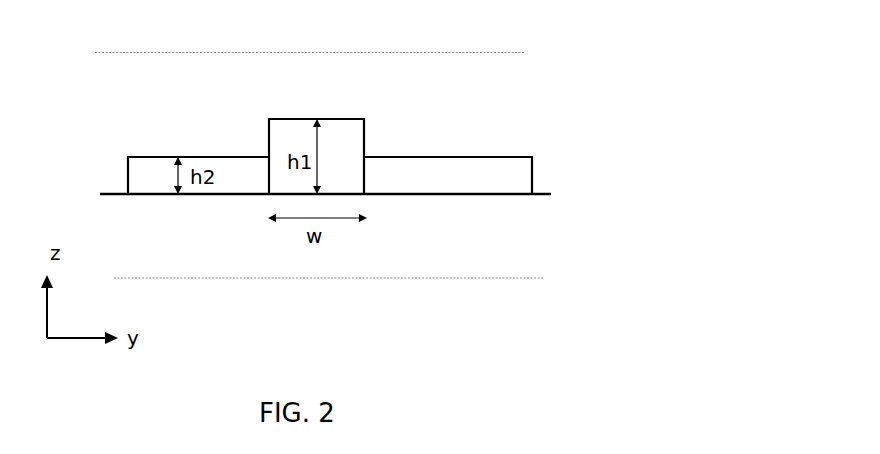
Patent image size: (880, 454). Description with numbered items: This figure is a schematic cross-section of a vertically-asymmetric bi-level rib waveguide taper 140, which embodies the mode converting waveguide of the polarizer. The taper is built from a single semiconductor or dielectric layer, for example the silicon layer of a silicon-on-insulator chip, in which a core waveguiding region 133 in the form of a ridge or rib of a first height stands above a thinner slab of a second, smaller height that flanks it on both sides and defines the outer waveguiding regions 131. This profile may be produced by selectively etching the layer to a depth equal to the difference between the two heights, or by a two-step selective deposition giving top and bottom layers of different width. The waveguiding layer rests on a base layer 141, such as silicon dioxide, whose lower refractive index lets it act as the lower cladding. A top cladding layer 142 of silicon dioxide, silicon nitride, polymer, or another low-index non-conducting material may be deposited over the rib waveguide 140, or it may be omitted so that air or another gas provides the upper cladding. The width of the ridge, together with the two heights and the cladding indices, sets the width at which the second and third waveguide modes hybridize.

The bi-level rib waveguide taper 140 is at (258, 62).
The top cladding layer 142 is at (310, 70).
The base layer 141 is at (328, 245).
The outer waveguiding region 131 is at (478, 157).
The core waveguiding region 133 is at (271, 137).